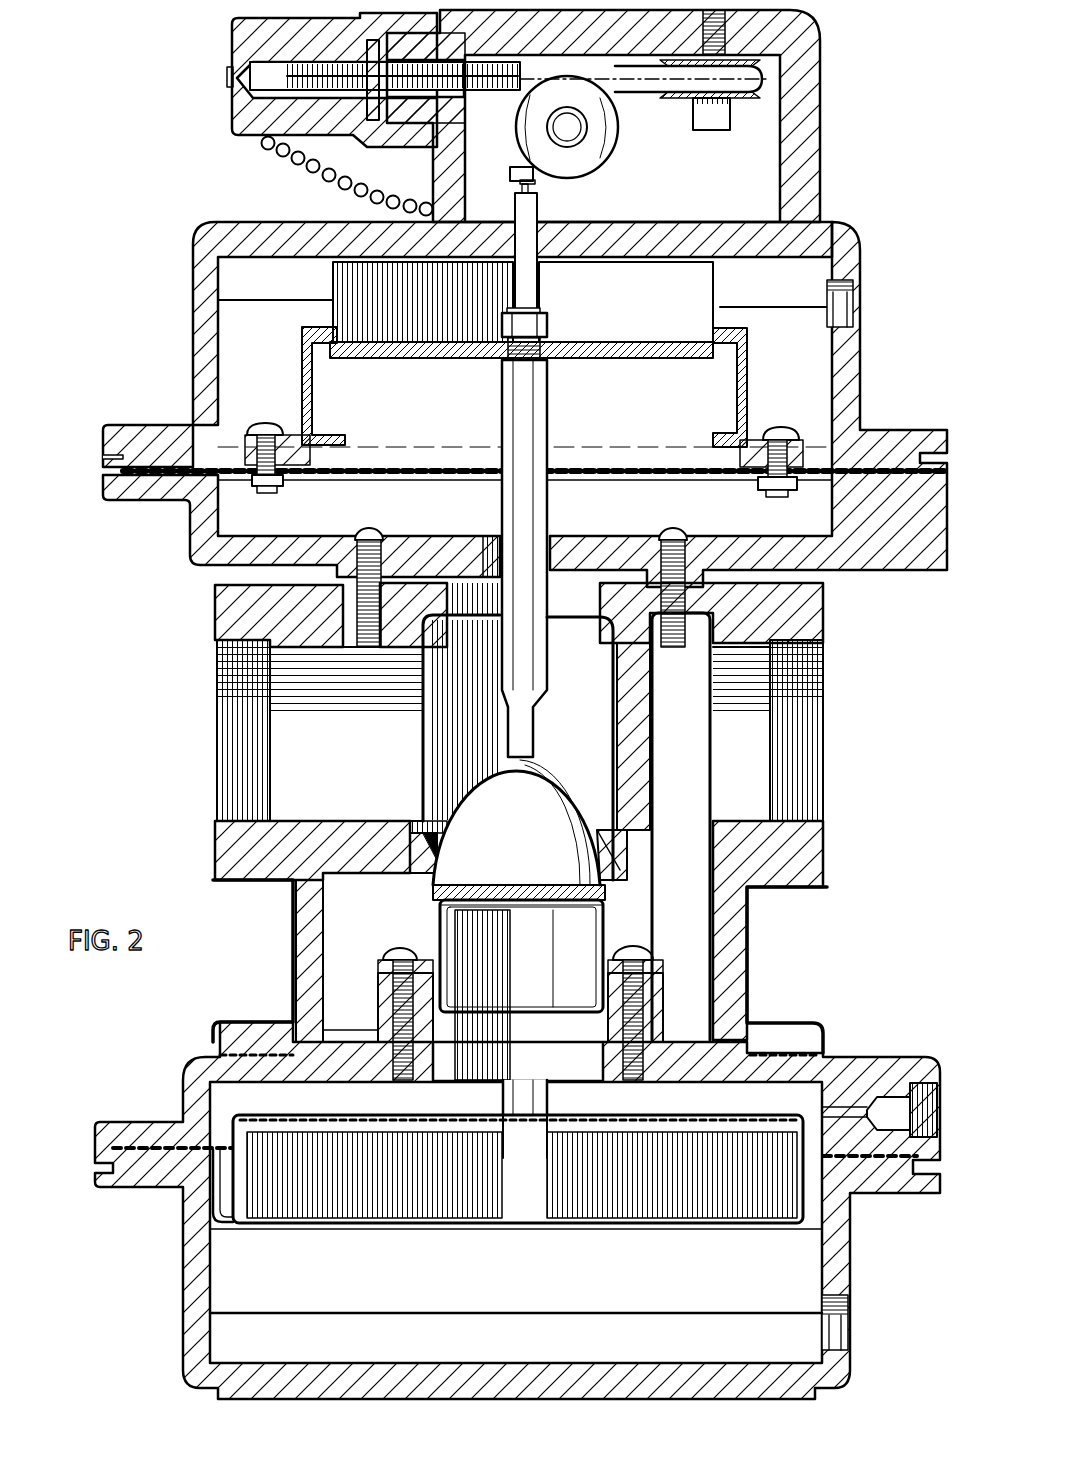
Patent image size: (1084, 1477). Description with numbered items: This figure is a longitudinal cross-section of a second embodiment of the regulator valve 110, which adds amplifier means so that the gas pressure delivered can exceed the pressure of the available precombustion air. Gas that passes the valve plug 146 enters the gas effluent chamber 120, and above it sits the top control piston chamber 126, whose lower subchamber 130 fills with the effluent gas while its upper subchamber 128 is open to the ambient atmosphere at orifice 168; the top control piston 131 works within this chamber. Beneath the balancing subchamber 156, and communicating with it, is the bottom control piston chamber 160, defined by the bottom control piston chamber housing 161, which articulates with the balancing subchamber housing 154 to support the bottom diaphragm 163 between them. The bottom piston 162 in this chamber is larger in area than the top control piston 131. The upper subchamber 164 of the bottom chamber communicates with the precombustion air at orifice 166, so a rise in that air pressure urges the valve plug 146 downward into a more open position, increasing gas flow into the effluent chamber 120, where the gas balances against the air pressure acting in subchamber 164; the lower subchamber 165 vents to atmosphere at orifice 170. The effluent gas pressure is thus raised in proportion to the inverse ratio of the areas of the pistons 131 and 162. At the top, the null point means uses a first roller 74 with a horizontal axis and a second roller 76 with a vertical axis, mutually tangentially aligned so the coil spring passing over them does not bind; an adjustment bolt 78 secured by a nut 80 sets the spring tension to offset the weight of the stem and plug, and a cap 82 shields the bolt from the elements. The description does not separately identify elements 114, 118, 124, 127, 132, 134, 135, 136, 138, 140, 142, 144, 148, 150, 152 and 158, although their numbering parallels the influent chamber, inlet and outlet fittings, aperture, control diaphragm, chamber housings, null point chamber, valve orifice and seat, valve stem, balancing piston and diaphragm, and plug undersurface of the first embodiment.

The first roller 74 is at (597, 162).
The second roller 76 is at (676, 104).
The bolt 78 is at (452, 104).
The nut 80 is at (362, 147).
The cap 82 is at (245, 36).
The regulator valve 110 is at (883, 992).
The passage 114 is at (696, 944).
The second coil 118 is at (810, 792).
The gas effluent chamber 120 is at (350, 784).
The first coil 124 is at (233, 772).
The top control piston chamber 126 is at (448, 406).
The bushing 127 is at (493, 543).
The upper subchamber 128 is at (747, 255).
The lower subchamber 130 is at (323, 383).
The top control piston 131 is at (620, 358).
The armature shell right wall 132 is at (737, 407).
The flange 134 is at (200, 520).
The bolt 135 is at (363, 533).
The upper housing 136 is at (200, 263).
The cavity 138 is at (738, 186).
The top housing 140 is at (813, 143).
The sleeve 142 is at (607, 828).
The valve seat 144 is at (627, 867).
The valve plug 146 is at (522, 824).
The valve stem 148 is at (538, 525).
The lower chamber 150 is at (593, 978).
The lower coil shell 152 is at (603, 938).
The balancing subchamber housing 154 is at (140, 1130).
The balancing subchamber 156 is at (573, 941).
The seal plate 158 is at (607, 890).
The bottom control piston chamber 160 is at (534, 1279).
The bottom control piston chamber housing 161 is at (190, 1247).
The bottom piston 162 is at (630, 1133).
The bottom diaphragm 163 is at (222, 1220).
The upper subchamber 164 is at (230, 1097).
The lower subchamber 165 is at (797, 1273).
The orifice 166 is at (927, 1058).
The orifice 168 is at (850, 305).
The orifice 170 is at (840, 1333).